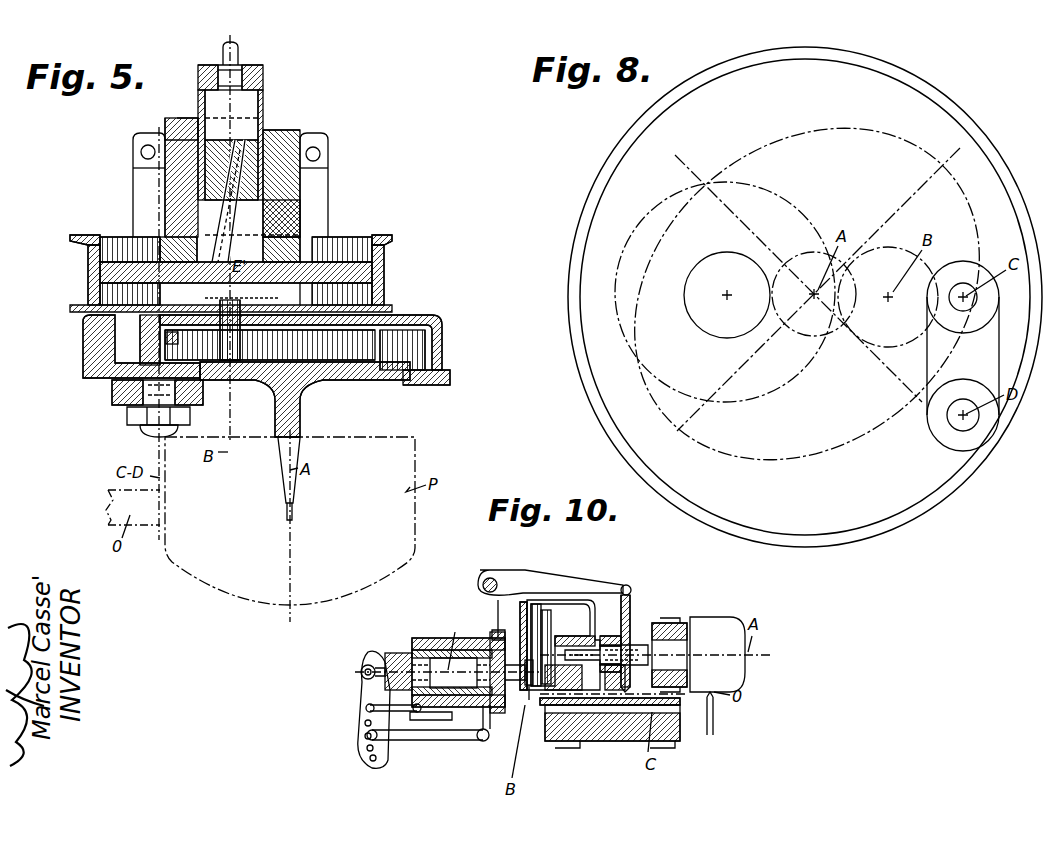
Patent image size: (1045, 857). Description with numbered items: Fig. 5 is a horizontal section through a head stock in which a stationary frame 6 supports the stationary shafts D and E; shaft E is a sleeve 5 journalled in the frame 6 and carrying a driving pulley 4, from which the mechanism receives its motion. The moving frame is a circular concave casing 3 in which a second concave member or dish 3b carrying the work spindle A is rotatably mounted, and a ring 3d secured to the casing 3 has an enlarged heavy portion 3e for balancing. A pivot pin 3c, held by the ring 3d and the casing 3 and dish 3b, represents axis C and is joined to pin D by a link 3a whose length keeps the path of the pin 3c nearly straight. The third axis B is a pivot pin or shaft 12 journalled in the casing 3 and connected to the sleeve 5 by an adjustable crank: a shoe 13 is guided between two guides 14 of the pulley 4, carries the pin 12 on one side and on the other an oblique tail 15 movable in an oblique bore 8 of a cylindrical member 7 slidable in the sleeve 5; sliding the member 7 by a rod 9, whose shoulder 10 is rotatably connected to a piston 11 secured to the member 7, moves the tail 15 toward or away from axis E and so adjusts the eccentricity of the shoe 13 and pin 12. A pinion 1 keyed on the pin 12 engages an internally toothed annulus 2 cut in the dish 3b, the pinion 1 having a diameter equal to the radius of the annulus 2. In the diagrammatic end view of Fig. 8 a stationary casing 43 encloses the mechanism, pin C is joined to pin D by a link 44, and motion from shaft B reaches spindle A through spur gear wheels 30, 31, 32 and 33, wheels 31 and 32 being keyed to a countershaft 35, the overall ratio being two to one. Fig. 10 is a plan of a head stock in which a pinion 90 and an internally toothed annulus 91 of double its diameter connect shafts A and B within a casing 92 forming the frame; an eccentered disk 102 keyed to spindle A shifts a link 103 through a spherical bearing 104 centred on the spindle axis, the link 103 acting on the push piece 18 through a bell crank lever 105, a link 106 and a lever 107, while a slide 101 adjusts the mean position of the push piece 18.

In FIG. 5, the pinion 1 is at (253, 437).
In FIG. 5, the internally toothed annulus 2 is at (418, 347).
In FIG. 5, the circular concave member or casing 3 is at (432, 320).
In FIG. 5, the link 3a is at (118, 395).
In FIG. 5, the second concave member or dish 3b is at (358, 378).
In FIG. 5, the pivot pin 3c is at (152, 390).
In FIG. 5, the ring 3d is at (425, 386).
In FIG. 5, the enlarged heavy portion 3e is at (96, 328).
In FIG. 5, the driving pulley 4 is at (320, 275).
In FIG. 5, the sleeve 5 is at (302, 216).
In FIG. 5, the stationary frame 6 is at (350, 236).
In FIG. 5, the cylindrical member 7 is at (262, 194).
In FIG. 5, the oblique bore 8 is at (290, 142).
In FIG. 5, the rod 9 is at (240, 52).
In FIG. 5, the shoulder 10 is at (244, 76).
In FIG. 5, the piston 11 is at (262, 108).
In FIG. 5, the pivot pin or shaft 12 is at (235, 328).
In FIG. 5, the shoe 13 is at (196, 286).
In FIG. 5, the guides 14 is at (303, 297).
In FIG. 5, the oblique projection or tail 15 is at (222, 232).
In FIG. 10, the oblique projection or tail 15 is at (515, 700).
In FIG. 10, the push piece 18 is at (373, 664).
In FIG. 8, the spur gear wheel 30 is at (890, 352).
In FIG. 8, the spur gear wheel 31 is at (744, 404).
In FIG. 8, the spur gear wheel 32 is at (710, 343).
In FIG. 8, the pinion 33 is at (803, 338).
In FIG. 8, the intermediate shaft or countershaft 35 is at (726, 298).
In FIG. 8, the stationary frame or casing 43 is at (636, 128).
In FIG. 8, the link 44 is at (976, 356).
In FIG. 10, the pinion 90 is at (548, 692).
In FIG. 10, the internally toothed annulus 91 is at (560, 625).
In FIG. 10, the casing 92 is at (518, 625).
In FIG. 10, the slide 101 is at (445, 722).
In FIG. 10, the eccentered disk 102 is at (620, 632).
In FIG. 10, the link 103 is at (632, 598).
In FIG. 10, the spherical bearing 104 is at (640, 622).
In FIG. 10, the bell crank lever 105 is at (502, 590).
In FIG. 10, the link 106 is at (410, 738).
In FIG. 10, the lever 107 is at (372, 700).